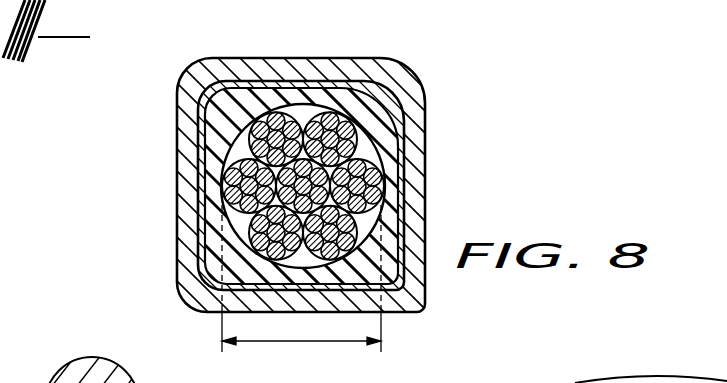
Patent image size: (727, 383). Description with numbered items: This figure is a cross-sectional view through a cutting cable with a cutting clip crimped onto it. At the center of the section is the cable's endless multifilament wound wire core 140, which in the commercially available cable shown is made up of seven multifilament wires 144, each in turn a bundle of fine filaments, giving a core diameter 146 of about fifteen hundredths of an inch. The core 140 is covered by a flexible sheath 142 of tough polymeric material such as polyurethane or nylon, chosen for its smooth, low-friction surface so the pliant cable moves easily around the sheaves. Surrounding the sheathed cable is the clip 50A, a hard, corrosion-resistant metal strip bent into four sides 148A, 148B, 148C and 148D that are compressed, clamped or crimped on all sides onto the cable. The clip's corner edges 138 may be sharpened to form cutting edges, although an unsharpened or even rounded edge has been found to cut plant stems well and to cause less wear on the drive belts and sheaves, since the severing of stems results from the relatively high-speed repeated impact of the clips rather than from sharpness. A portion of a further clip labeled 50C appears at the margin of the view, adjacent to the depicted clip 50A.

The clip 50A is at (152, 254).
The adjacent cable assembly 50C is at (585, 382).
The corner edge 138 is at (183, 79).
The wound wire core 140 is at (400, 128).
The flexible sheath 142 is at (218, 135).
The multifilament wires 144 is at (380, 183).
The core diameter 146 is at (318, 344).
The side 148A is at (420, 212).
The side 148B is at (299, 58).
The side 148C is at (178, 191).
The side 148D is at (398, 313).